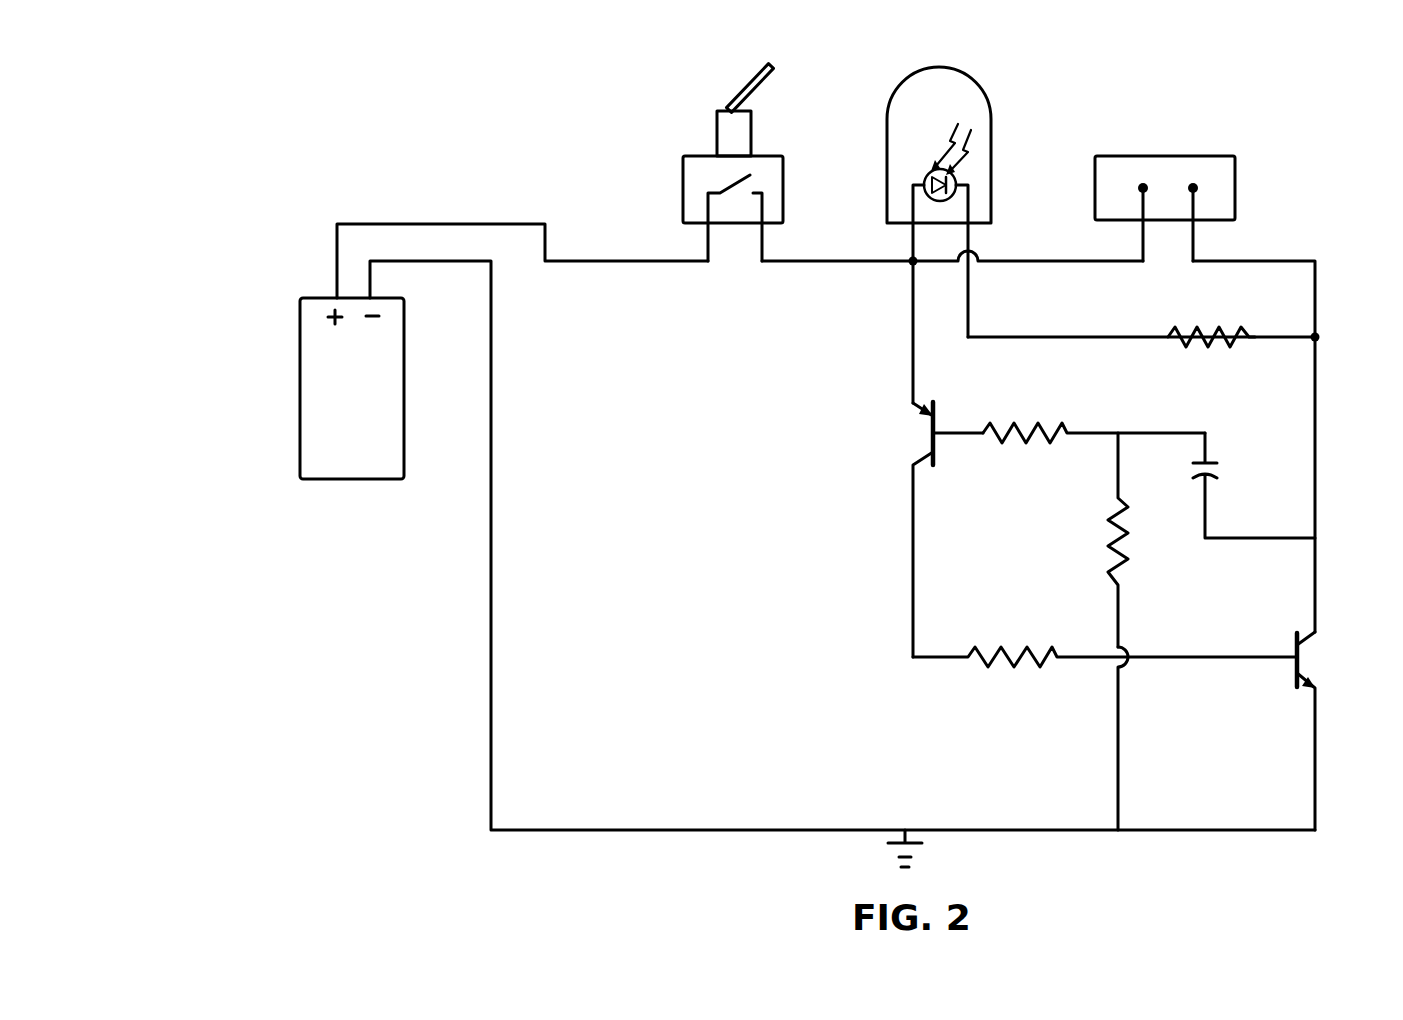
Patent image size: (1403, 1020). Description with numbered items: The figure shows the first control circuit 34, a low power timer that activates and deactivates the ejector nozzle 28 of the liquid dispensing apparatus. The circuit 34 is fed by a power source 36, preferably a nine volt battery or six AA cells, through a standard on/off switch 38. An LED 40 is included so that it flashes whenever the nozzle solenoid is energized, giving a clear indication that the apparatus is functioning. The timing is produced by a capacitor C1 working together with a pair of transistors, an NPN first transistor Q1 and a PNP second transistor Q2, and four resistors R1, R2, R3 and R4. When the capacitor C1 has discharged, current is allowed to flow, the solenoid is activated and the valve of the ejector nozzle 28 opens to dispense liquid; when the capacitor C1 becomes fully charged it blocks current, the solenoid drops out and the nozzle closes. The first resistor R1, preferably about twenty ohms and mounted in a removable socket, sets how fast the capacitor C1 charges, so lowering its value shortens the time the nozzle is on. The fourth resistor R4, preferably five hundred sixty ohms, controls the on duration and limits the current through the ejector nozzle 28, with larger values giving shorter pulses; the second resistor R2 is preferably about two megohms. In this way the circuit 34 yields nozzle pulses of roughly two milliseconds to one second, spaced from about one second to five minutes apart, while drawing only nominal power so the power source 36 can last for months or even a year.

The ejector nozzle 28 is at (1173, 160).
The first control circuit 34 is at (562, 151).
The power source 36 is at (347, 460).
The switch 38 is at (728, 133).
The LED 40 is at (980, 79).
The first resistor R1 is at (1094, 414).
The second resistor R2 is at (1142, 631).
The third resistor R3 is at (1211, 316).
The fourth resistor R4 is at (1105, 633).
The capacitor C1 is at (1254, 485).
The first transistor Q1 is at (1333, 731).
The second transistor Q2 is at (923, 529).